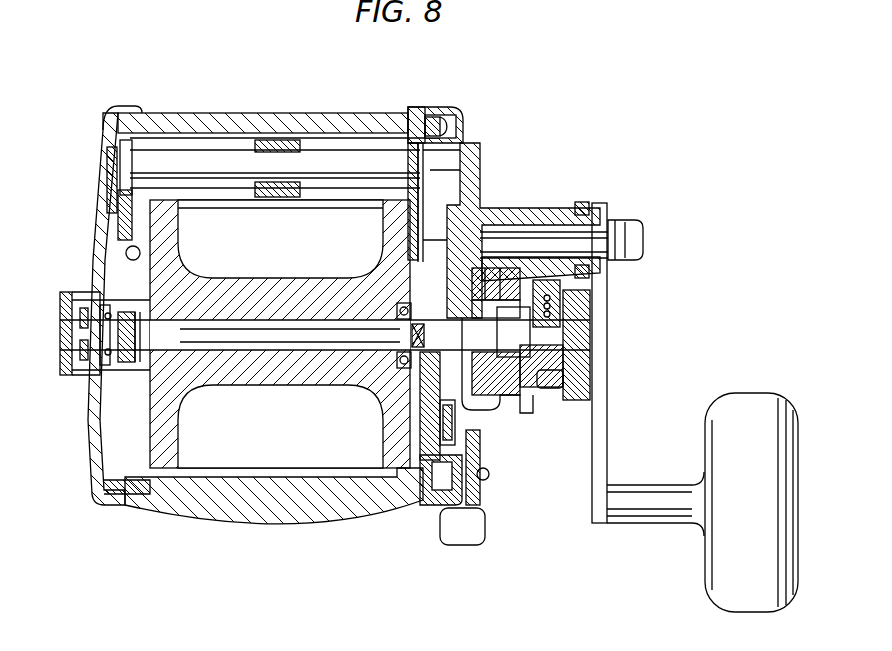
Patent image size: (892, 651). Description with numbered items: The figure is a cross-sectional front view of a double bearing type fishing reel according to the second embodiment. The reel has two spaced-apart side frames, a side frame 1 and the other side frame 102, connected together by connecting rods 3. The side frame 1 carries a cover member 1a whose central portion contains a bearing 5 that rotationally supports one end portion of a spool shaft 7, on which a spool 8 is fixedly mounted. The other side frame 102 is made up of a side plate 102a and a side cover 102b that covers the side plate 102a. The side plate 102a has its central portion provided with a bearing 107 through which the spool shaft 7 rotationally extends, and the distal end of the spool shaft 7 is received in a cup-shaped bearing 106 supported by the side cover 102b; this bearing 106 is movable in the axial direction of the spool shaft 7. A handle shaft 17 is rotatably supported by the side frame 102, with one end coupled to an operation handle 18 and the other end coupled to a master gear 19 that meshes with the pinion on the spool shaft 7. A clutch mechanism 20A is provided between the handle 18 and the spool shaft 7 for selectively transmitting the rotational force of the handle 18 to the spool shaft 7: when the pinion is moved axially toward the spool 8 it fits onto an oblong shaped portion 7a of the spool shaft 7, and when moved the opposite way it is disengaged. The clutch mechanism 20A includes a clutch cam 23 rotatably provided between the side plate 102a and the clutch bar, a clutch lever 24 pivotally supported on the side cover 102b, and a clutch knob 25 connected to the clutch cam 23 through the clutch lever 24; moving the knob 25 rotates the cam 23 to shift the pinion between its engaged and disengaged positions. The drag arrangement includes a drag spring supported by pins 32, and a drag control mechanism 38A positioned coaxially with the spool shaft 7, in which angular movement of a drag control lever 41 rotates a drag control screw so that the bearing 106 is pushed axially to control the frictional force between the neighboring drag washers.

The side frame 1 is at (98, 115).
The cover member 1a is at (98, 168).
The connecting rods 3 is at (183, 122).
The bearing 5 is at (113, 360).
The spool shaft 7 is at (262, 330).
The oblong shaped portion 7a is at (432, 340).
The spool 8 is at (228, 297).
The handle shaft 17 is at (525, 235).
The operation handle 18 is at (598, 368).
The master gear 19 is at (478, 160).
The clutch mechanism 20A is at (443, 484).
The clutch cam 23 is at (427, 383).
The clutch lever 24 is at (437, 418).
The clutch knob 25 is at (478, 502).
The pins 32 is at (570, 317).
The drag control mechanism 38A is at (598, 340).
The drag control lever 41 is at (567, 380).
The side frame 102 is at (444, 100).
The side plate 102a is at (420, 108).
The side cover 102b is at (465, 113).
The cup-shaped bearing 106 is at (533, 380).
The bearing 107 is at (390, 303).